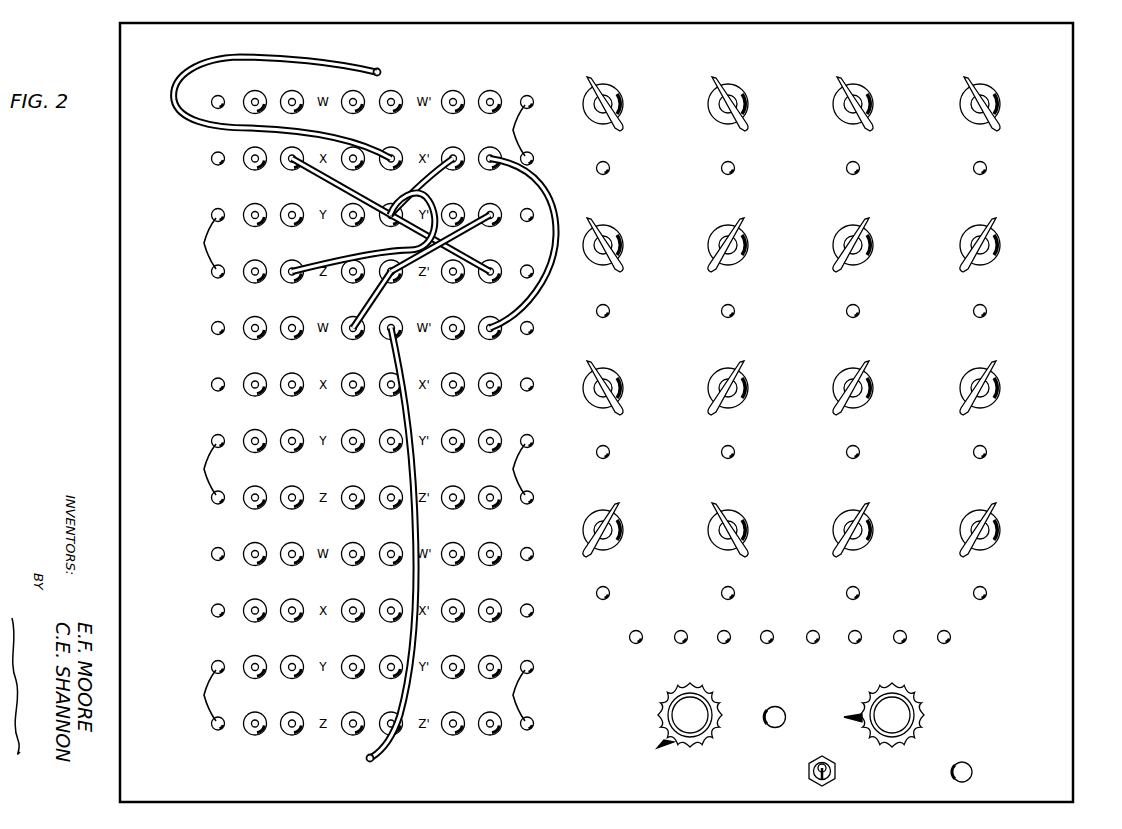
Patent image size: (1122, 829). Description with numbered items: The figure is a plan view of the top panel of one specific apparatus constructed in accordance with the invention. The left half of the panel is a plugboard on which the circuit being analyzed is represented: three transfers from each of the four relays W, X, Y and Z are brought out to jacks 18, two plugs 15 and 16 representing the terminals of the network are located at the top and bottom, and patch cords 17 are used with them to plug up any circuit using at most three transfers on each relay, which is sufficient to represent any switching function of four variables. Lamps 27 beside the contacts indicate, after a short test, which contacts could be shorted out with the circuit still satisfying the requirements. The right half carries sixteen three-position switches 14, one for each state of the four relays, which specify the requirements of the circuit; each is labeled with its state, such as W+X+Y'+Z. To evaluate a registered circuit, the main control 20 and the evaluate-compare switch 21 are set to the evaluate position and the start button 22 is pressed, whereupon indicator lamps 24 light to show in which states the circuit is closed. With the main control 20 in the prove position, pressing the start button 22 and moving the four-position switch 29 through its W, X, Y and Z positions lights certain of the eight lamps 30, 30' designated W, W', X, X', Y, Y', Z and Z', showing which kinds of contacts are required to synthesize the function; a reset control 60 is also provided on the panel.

The three-position switch 14 is at (588, 78).
The plug 15 is at (185, 131).
The plug 16 is at (386, 746).
The patch cord 17 is at (338, 185).
The jack 18 is at (290, 91).
The main control switch 20 is at (915, 710).
The evaluate-compare switch 21 is at (836, 771).
The start button 22 is at (772, 705).
The indicator lamp 24 is at (609, 173).
The lamp 27 is at (203, 243).
The four-position switch 29 is at (693, 747).
The lamp 30 is at (700, 642).
The unprimed variable jacks 30' is at (879, 642).
The reset button 60 is at (973, 772).